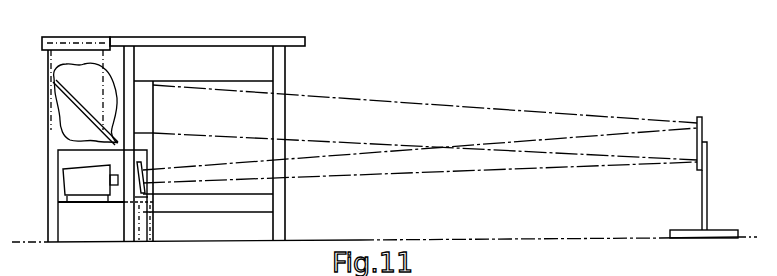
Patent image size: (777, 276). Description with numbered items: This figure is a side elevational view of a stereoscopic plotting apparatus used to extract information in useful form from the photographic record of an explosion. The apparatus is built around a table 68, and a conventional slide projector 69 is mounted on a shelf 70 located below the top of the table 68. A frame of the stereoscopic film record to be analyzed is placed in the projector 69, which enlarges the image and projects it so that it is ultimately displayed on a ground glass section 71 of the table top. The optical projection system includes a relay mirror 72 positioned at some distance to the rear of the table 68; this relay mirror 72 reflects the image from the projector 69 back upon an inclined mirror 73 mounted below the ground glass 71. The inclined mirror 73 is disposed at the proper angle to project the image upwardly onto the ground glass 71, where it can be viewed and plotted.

The table 68 is at (285, 76).
The slide projector 69 is at (88, 190).
The shelf 70 is at (117, 206).
The ground glass section 71 is at (86, 37).
The relay mirror 72 is at (708, 130).
The inclined mirror 73 is at (70, 106).